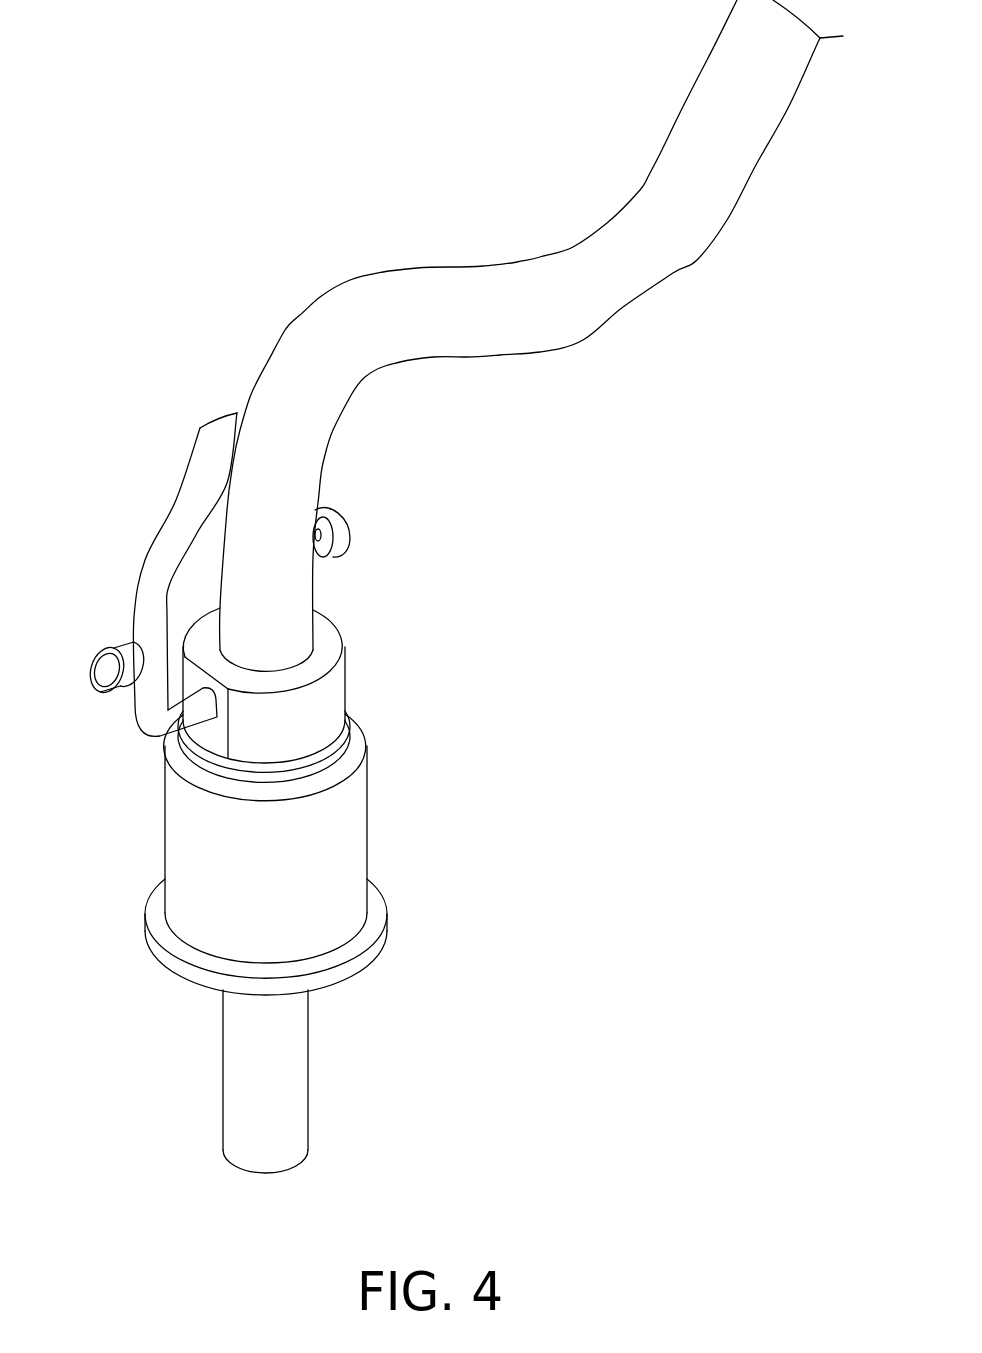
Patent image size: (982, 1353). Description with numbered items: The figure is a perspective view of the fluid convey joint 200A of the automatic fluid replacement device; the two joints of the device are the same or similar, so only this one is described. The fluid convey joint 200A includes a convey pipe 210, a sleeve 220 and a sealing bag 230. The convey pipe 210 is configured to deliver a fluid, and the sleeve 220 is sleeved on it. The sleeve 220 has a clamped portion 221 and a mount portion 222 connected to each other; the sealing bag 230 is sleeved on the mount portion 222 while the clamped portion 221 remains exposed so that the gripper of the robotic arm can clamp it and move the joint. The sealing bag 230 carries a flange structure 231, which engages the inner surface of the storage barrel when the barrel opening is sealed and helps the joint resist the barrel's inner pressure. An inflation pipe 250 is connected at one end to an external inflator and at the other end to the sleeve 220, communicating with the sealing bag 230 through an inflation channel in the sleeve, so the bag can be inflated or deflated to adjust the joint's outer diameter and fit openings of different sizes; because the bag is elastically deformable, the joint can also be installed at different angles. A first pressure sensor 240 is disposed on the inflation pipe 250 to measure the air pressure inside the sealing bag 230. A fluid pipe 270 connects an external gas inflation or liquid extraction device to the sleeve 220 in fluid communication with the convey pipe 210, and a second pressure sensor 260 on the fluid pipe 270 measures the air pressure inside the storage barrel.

The fluid convey joint 200A is at (198, 52).
The convey pipe 210 is at (292, 1100).
The sleeve 220 is at (360, 695).
The clamped portion 221 is at (335, 685).
The mount portion 222 is at (333, 763).
The sealing bag 230 is at (352, 835).
The flange structure 231 is at (372, 937).
The first pressure sensor 240 is at (117, 645).
The inflation pipe 250 is at (170, 535).
The second pressure sensor 260 is at (342, 537).
The fluid pipe 270 is at (668, 257).